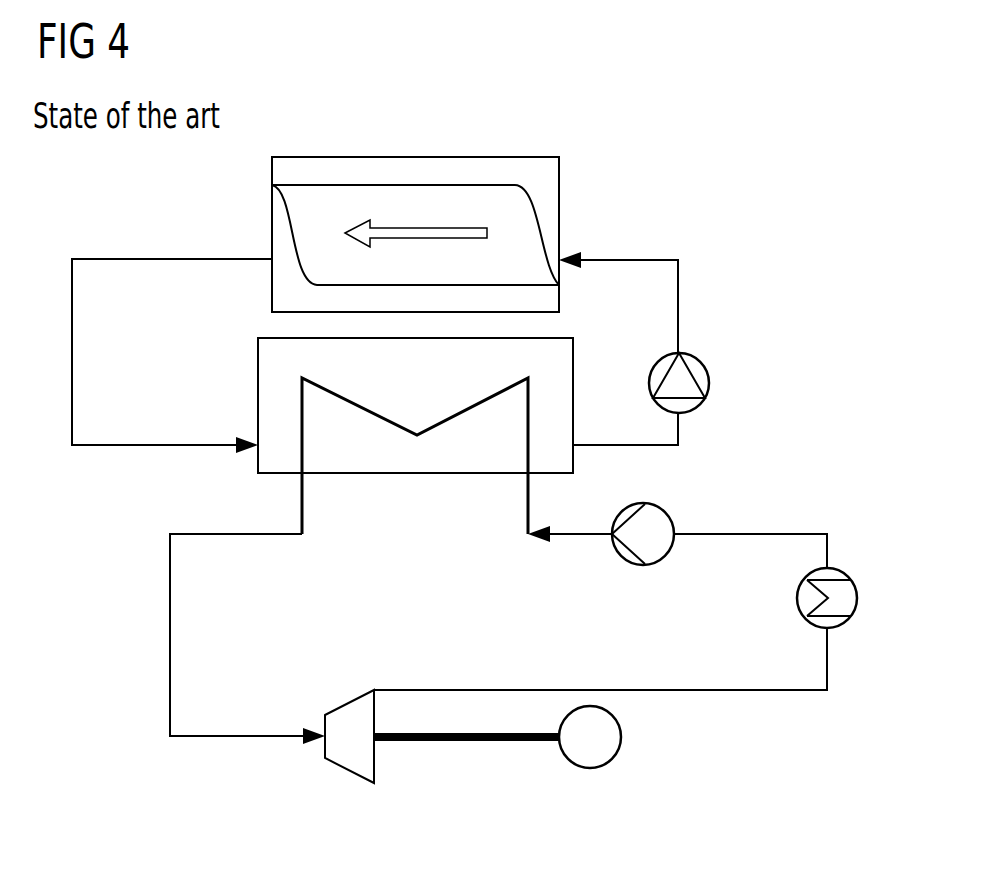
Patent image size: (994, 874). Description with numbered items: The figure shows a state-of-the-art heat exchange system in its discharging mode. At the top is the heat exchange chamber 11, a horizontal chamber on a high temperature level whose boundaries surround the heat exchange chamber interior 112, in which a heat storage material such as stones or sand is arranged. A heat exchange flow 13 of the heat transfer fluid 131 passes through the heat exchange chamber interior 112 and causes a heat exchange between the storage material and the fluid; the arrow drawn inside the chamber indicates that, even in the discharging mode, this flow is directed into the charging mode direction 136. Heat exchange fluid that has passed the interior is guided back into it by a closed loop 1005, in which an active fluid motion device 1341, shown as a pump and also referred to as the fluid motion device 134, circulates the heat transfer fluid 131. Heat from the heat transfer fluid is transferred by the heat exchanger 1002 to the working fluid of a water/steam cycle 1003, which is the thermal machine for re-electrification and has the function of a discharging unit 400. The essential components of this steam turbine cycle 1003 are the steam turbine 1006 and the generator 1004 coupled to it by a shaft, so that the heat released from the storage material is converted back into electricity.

The heat exchange chamber 11 is at (449, 200).
The heat exchange chamber interior 112 is at (546, 163).
The heat exchange flow 13 is at (412, 168).
The heat transfer fluid 131 is at (412, 168).
The charging mode direction 136 is at (403, 232).
The heat exchanger 1002 is at (258, 462).
The closed loop 1005 is at (678, 307).
The fluid motion device 134 is at (756, 383).
The active fluid motion device 1341 is at (710, 382).
The discharging unit 400 is at (132, 640).
The water/steam cycle 1003 is at (812, 733).
The generator 1004 is at (622, 737).
The steam turbine 1006 is at (374, 758).